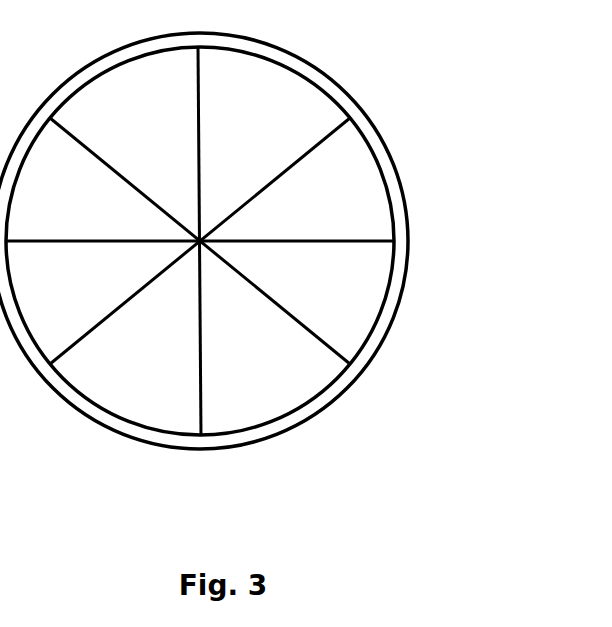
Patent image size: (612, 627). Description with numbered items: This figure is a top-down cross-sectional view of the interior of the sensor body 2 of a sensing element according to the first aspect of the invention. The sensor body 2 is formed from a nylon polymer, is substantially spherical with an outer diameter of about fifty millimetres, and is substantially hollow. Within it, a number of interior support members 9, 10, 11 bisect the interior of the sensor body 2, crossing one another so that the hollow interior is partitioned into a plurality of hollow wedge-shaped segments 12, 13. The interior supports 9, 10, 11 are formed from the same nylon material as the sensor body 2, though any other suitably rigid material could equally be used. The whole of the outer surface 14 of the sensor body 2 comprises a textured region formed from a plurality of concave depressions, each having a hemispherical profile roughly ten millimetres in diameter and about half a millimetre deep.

The sensor body 2 is at (290, 53).
The outer surface 14 is at (370, 124).
The interior support member 9 is at (377, 242).
The interior support member 10 is at (325, 343).
The interior support member 11 is at (197, 410).
The hollow wedge-shaped segment 12 is at (362, 300).
The hollow wedge-shaped segment 13 is at (252, 380).